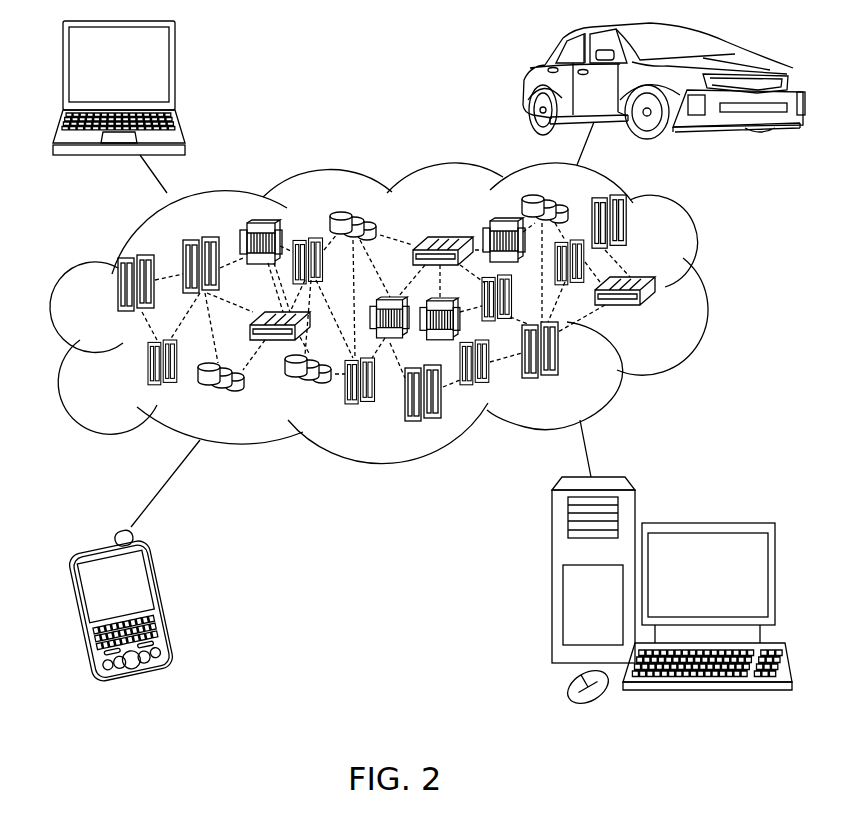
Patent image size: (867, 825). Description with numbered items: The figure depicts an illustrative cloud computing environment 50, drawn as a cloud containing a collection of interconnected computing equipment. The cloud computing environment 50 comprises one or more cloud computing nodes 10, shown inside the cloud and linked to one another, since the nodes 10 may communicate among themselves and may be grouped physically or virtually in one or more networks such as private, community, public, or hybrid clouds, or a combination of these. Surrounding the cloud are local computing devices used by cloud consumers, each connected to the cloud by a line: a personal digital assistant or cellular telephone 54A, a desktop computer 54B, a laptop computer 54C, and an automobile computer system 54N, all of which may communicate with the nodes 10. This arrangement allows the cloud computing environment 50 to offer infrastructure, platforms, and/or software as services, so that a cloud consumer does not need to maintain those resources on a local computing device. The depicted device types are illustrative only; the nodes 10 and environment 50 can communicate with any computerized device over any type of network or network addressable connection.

The cloud computing node 10 is at (411, 313).
The cloud computing environment 50 is at (705, 292).
The personal digital assistant or cellular telephone 54A is at (168, 603).
The desktop computer 54B is at (725, 523).
The laptop computer 54C is at (175, 63).
The automobile computer system 54N is at (526, 80).